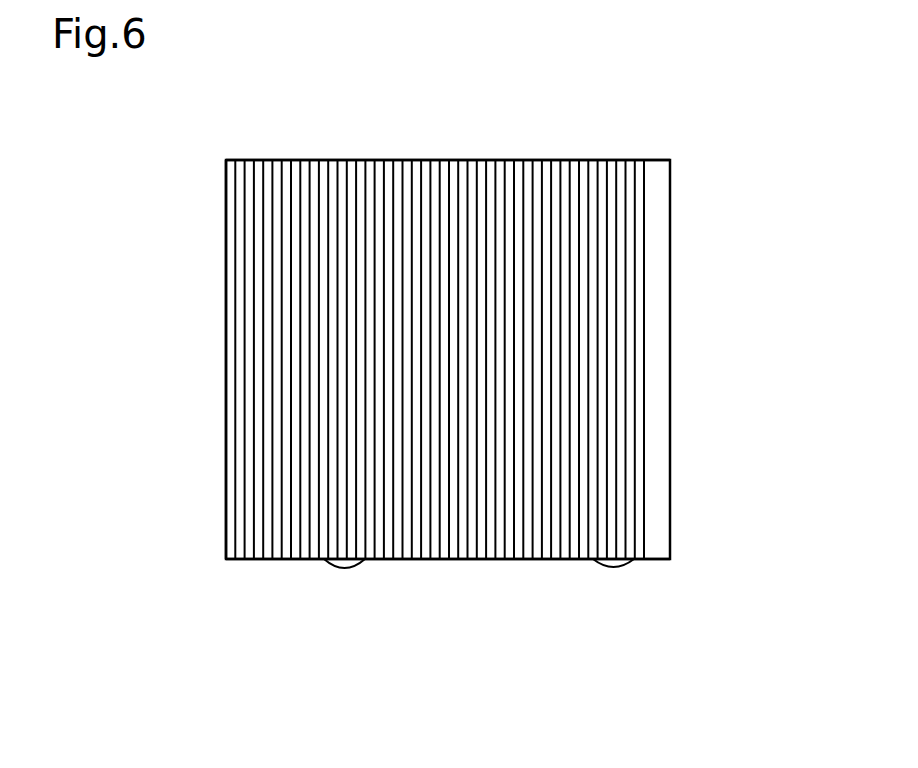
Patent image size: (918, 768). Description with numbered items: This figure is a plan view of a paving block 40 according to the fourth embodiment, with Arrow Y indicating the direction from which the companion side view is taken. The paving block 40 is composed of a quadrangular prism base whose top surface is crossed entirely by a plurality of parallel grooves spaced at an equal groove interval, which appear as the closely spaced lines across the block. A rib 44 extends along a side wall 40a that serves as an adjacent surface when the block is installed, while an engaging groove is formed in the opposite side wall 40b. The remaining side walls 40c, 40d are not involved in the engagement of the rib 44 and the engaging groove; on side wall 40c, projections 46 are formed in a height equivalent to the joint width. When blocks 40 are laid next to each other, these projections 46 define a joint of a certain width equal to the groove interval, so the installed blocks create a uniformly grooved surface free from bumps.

The paving block 40 is at (625, 128).
The side wall 40a is at (215, 362).
The opposite side wall 40b is at (644, 377).
The side wall 40c is at (445, 578).
The side wall 40d is at (429, 143).
The rib 44 is at (660, 520).
The projections 46 is at (614, 567).
The Arrow Y is at (415, 589).